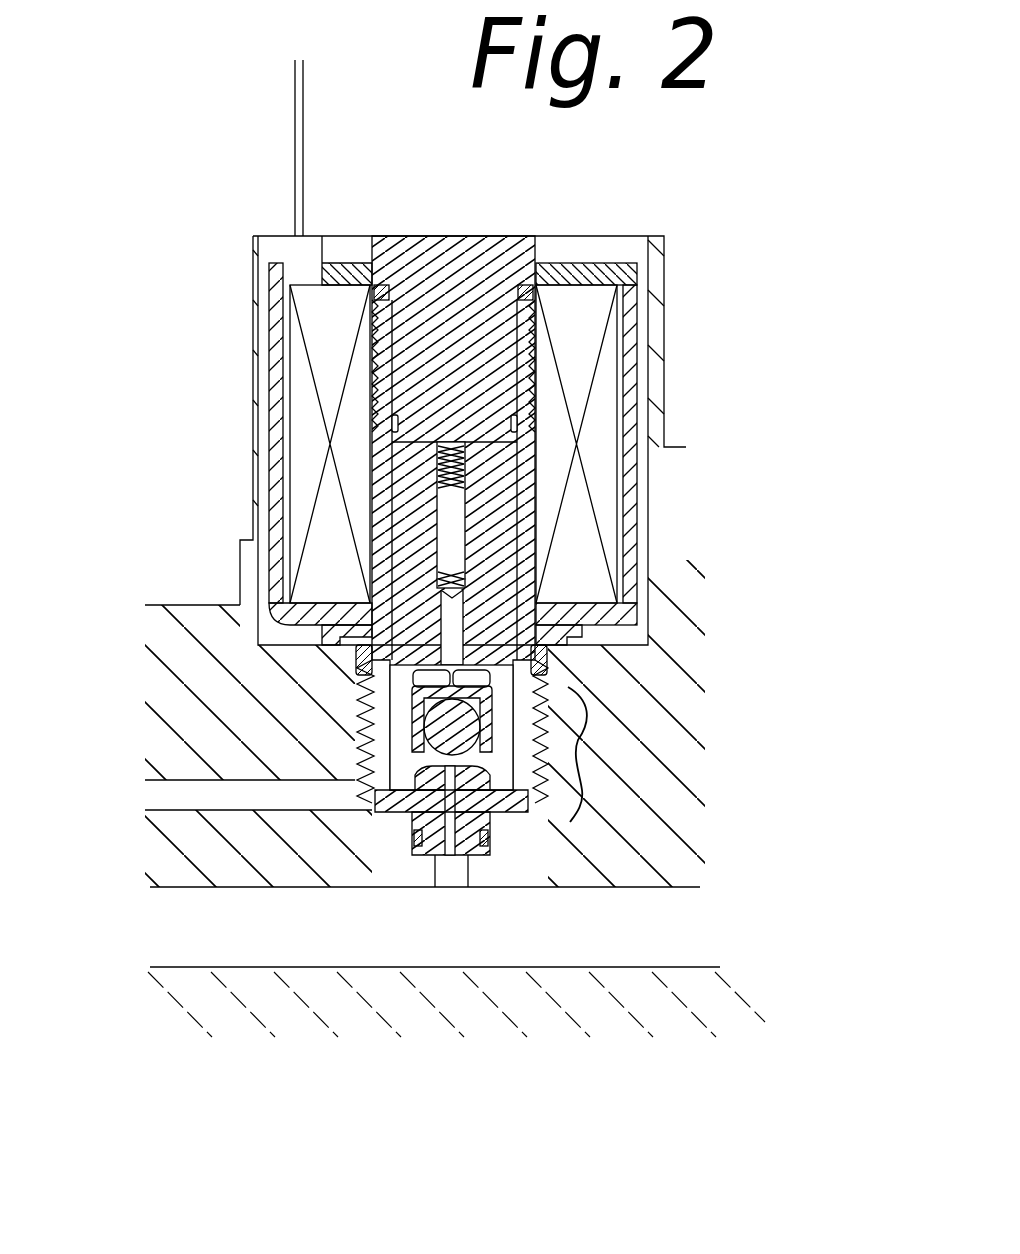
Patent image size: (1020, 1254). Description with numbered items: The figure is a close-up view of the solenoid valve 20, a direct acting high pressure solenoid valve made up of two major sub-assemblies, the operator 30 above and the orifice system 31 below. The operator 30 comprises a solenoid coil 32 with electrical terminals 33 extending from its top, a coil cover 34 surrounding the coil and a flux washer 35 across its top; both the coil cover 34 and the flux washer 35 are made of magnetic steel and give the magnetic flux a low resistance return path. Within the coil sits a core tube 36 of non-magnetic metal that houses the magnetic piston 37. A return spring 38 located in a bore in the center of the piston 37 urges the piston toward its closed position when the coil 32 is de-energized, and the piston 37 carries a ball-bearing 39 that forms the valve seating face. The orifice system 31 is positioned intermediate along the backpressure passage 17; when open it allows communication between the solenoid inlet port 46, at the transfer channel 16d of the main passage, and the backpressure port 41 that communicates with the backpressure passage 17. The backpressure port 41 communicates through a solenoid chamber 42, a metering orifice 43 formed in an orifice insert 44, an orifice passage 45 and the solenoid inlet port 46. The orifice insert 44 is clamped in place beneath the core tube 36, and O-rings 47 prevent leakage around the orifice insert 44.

The solenoid valve 20 is at (590, 181).
The operator 30 is at (700, 235).
The orifice system 31 is at (585, 757).
The solenoid coil 32 is at (322, 335).
The electrical terminals 33 is at (298, 175).
The coil cover 34 is at (270, 378).
The flux washer 35 is at (344, 264).
The core tube 36 is at (373, 626).
The piston 37 is at (492, 565).
The return spring 38 is at (468, 465).
The ball-bearing 39 is at (395, 757).
The backpressure port 41 is at (230, 800).
The solenoid chamber 42 is at (373, 745).
The metering orifice 43 is at (456, 838).
The orifice insert 44 is at (505, 805).
The orifice passage 45 is at (490, 853).
The solenoid inlet port 46 is at (540, 882).
The O-rings 47 is at (353, 667).
The backpressure passage 17 is at (443, 873).
The transfer channel 16d is at (668, 957).